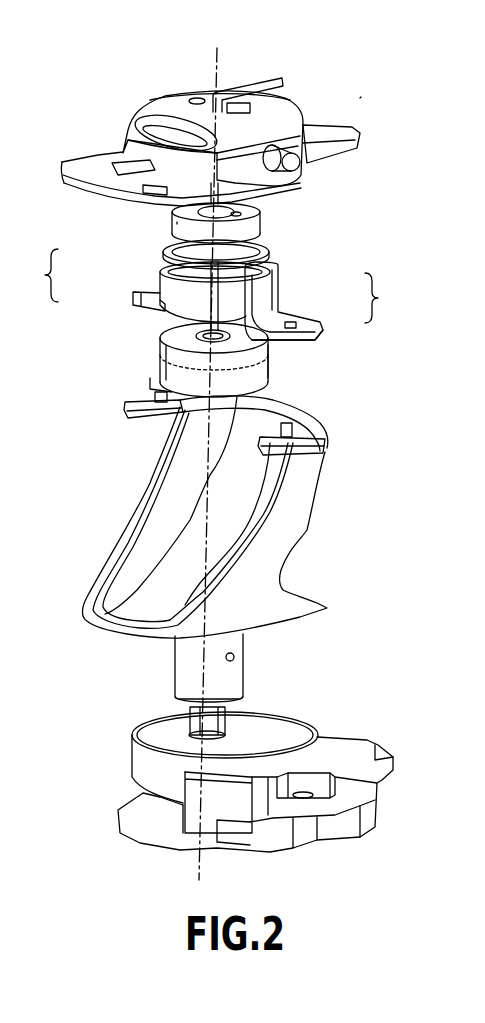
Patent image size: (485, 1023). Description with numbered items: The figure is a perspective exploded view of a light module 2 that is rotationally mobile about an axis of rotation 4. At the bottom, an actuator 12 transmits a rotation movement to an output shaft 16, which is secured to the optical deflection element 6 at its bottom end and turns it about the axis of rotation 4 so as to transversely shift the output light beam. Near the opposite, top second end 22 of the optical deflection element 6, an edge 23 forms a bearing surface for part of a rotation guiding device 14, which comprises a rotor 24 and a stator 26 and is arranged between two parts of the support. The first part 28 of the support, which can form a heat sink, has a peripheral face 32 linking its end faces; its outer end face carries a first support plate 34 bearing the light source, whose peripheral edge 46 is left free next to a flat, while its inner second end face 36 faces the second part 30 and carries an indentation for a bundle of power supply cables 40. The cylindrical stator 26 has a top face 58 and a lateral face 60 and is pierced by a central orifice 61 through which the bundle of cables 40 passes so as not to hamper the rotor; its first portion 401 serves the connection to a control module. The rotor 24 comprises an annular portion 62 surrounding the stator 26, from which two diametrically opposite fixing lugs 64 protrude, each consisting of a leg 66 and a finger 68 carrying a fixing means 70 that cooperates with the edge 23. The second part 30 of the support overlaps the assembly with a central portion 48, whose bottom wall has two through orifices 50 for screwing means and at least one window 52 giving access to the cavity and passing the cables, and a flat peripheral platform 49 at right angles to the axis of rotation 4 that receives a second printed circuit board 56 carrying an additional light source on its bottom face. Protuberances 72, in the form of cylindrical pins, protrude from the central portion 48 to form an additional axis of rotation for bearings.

The light module 2 is at (360, 98).
The axis of rotation 4 is at (198, 866).
The optical deflection element 6 is at (310, 537).
The actuator 12 is at (143, 763).
The rotation guiding device 14 is at (40, 275).
The output shaft 16 is at (188, 678).
The second end 22 is at (326, 416).
The edge 23 is at (327, 444).
The rotor 24 is at (157, 270).
The stator 26 is at (177, 223).
The first part of the support 28 is at (154, 356).
The second part of the support 30 is at (122, 127).
The peripheral face 32 is at (170, 365).
The first support plate 34 is at (160, 378).
The inner second end face 36 is at (180, 340).
The bundle of power supply cables 40 is at (270, 373).
The peripheral edge 46 is at (178, 106).
The central portion 48 is at (140, 103).
The peripheral portion 49 is at (78, 153).
The through orifice 50 is at (197, 98).
The window 52 is at (248, 107).
The second printed circuit board 56 is at (90, 188).
The top face 58 is at (247, 203).
The lateral face 60 is at (240, 235).
The central orifice 61 is at (230, 220).
The annular portion 62 is at (267, 263).
The fixing lug 64 is at (382, 298).
The leg 66 is at (270, 298).
The finger 68 is at (298, 328).
The fixing means 70 is at (280, 343).
The protuberance 72 is at (307, 163).
The first portion 401 is at (258, 92).